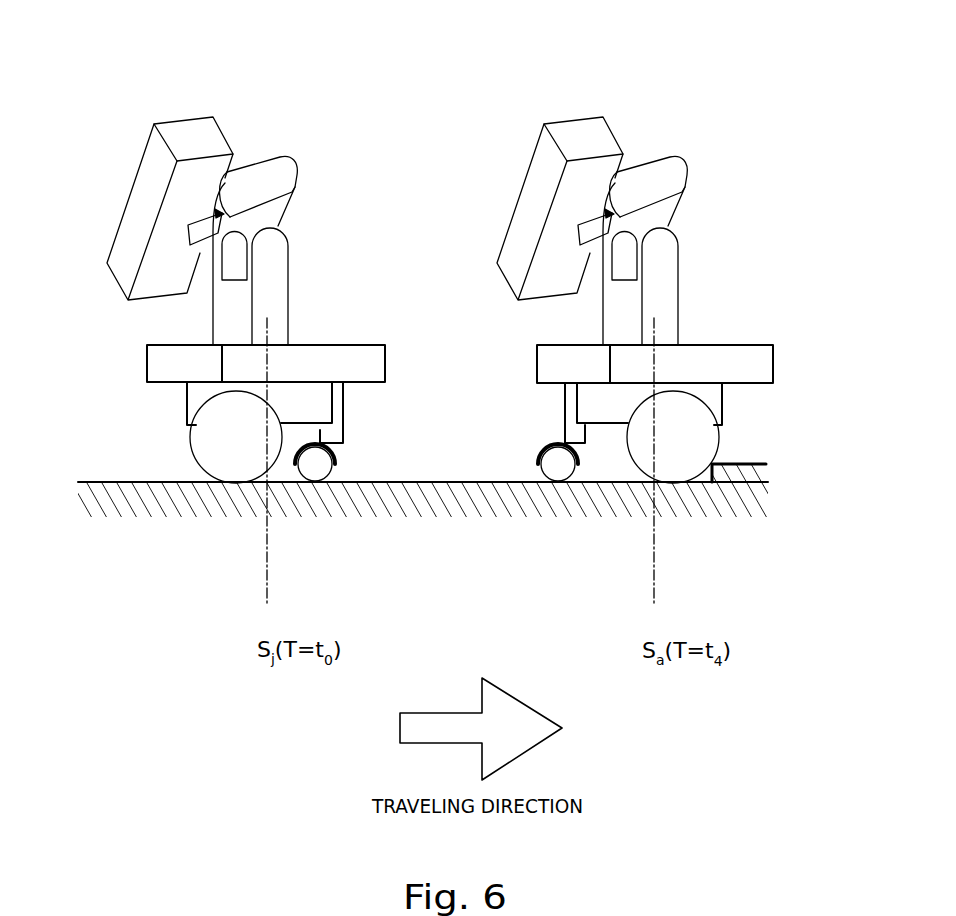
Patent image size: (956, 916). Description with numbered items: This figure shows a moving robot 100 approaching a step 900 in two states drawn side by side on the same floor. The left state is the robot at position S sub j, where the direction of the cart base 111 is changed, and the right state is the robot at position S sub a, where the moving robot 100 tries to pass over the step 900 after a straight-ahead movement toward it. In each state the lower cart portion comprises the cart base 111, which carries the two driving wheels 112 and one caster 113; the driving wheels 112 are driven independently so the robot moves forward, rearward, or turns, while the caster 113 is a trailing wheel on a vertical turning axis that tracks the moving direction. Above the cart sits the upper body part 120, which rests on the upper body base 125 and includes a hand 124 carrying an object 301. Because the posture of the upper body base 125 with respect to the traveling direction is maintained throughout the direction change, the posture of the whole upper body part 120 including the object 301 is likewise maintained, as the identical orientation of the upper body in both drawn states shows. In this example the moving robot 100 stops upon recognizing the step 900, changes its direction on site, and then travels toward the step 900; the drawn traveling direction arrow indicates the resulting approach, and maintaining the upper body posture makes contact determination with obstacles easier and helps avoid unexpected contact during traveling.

The moving robot 100 is at (420, 250).
The cart base 111 is at (187, 402).
The driving wheels 112 is at (203, 452).
The caster 113 is at (320, 474).
The upper body part 120 is at (405, 226).
The hand 124 is at (194, 240).
The upper body base 125 is at (342, 357).
The object 301 is at (212, 145).
The step 900 is at (713, 477).